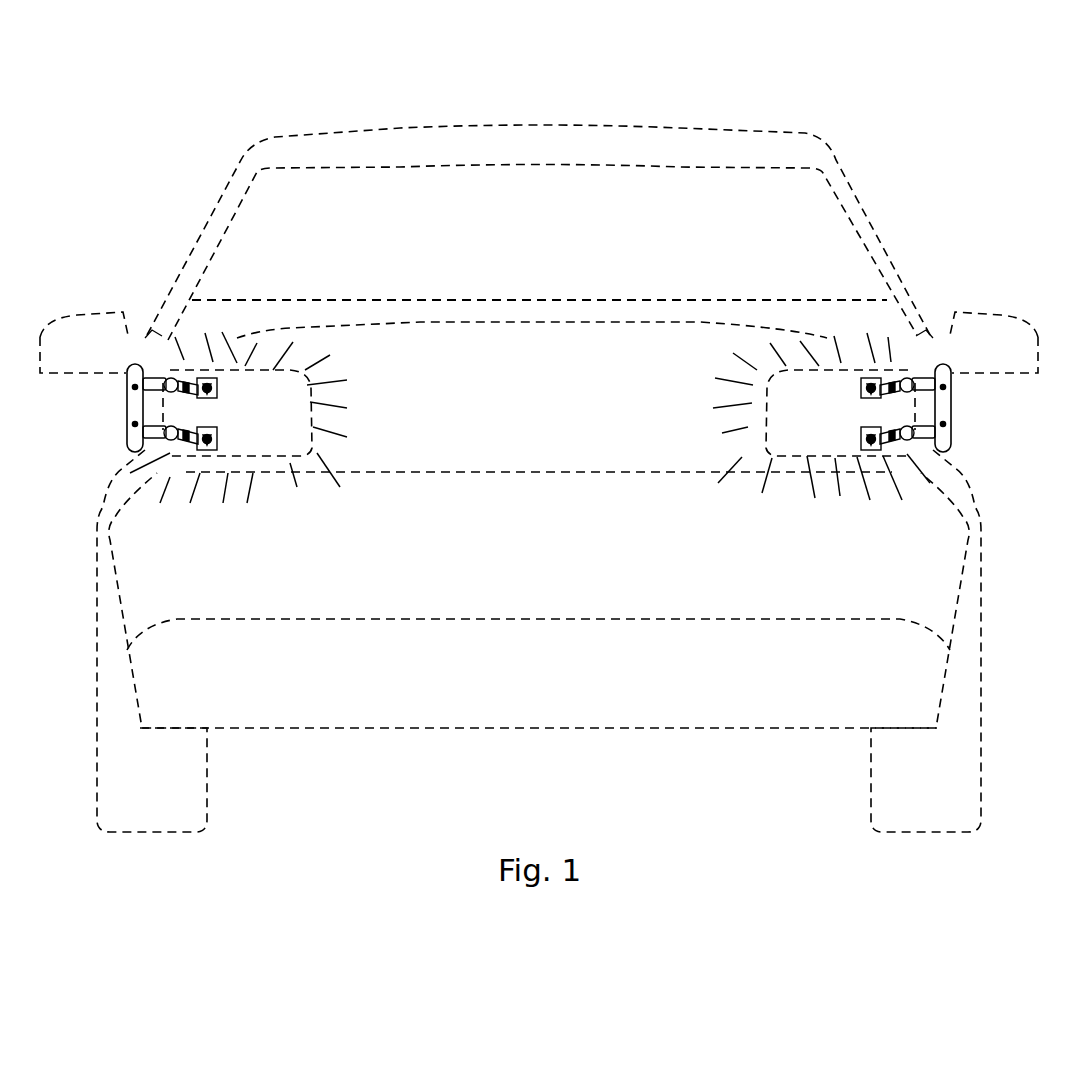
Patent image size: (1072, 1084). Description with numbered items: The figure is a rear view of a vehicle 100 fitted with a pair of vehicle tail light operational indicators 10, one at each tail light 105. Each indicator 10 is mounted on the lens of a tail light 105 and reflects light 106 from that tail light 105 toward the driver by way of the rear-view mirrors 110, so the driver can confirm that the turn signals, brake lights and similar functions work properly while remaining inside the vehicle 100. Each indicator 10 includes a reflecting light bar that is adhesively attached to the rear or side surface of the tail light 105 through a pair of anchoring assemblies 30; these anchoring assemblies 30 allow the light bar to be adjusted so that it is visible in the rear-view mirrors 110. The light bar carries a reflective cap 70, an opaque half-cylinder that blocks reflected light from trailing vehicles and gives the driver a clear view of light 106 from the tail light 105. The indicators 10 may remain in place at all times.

The vehicle tail light operational indicator 10 is at (527, 416).
The anchoring assembly 30 is at (217, 428).
The reflective cap 70 is at (137, 403).
The vehicle 100 is at (263, 169).
The tail light 105 is at (243, 443).
The light 106 is at (323, 468).
The rear-view mirror 110 is at (74, 318).